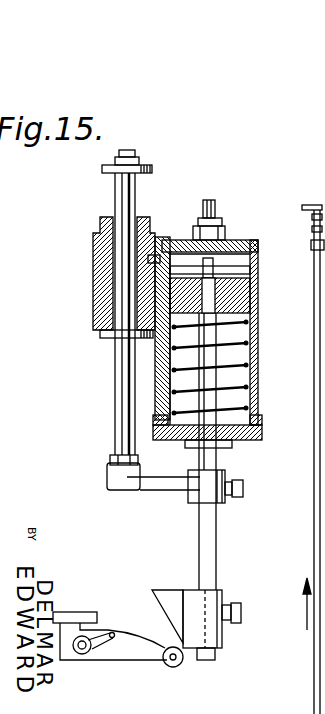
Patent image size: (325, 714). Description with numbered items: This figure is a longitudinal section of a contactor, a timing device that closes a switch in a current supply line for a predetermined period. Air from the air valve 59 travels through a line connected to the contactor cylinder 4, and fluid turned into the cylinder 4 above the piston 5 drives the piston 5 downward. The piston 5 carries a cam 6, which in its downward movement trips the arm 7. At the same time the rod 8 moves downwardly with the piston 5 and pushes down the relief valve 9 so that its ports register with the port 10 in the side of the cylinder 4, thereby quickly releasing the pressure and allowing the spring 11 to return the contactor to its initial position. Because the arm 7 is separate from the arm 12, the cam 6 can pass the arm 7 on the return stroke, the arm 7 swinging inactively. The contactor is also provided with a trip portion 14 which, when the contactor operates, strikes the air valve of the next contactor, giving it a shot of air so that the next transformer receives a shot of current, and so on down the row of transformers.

The contactor cylinder 4 is at (259, 361).
The piston 5 is at (258, 290).
The cam 6 is at (153, 609).
The arm 7 is at (124, 662).
The rod 8 is at (120, 376).
The relief valve 9 is at (100, 219).
The port 10 is at (179, 240).
The spring 11 is at (248, 401).
The arm 12 is at (83, 615).
The trip portion 14 is at (206, 662).
The air valve 59 is at (312, 249).